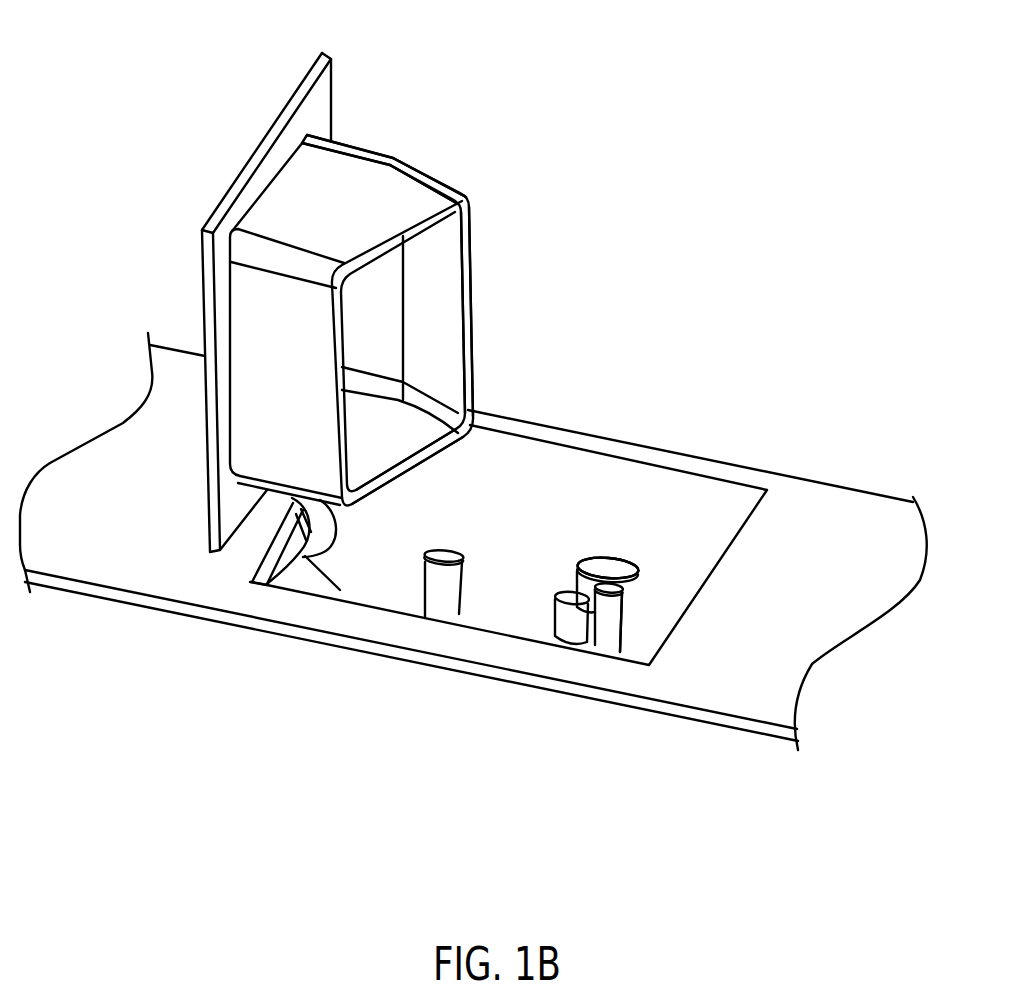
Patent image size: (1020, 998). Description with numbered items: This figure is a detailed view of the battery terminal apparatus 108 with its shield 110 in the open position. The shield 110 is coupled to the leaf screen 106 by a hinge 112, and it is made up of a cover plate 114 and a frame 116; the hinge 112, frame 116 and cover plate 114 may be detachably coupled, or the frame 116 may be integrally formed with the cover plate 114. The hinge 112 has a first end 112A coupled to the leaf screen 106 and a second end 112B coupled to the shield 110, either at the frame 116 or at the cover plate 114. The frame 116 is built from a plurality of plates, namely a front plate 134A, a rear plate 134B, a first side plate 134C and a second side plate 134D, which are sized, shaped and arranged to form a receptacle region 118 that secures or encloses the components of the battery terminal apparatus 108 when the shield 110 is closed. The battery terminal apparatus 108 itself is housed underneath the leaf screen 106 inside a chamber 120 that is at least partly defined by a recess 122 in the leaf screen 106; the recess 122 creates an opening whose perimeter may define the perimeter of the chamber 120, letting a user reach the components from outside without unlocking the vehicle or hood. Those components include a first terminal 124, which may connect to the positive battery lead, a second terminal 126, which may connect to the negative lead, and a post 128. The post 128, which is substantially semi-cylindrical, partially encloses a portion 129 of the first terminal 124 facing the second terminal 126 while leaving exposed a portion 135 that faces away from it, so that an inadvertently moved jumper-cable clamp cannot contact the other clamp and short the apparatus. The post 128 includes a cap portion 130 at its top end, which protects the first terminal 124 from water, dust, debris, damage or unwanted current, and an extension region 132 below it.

The leaf screen 106 is at (143, 452).
The battery terminal apparatus 108 is at (511, 527).
The shield 110 is at (262, 138).
The hinge 112 is at (306, 548).
The first end 112A is at (265, 582).
The second end 112B is at (297, 498).
The cover plate 114 is at (315, 72).
The frame 116 is at (368, 149).
The receptacle region 118 is at (397, 299).
The chamber 120 is at (617, 520).
The recess 122 is at (723, 530).
The first terminal 124 is at (609, 622).
The second terminal 126 is at (440, 598).
The post 128 is at (572, 576).
The portion 129 is at (598, 630).
The cap portion 130 is at (620, 560).
The extension region 132 is at (567, 628).
The front plate 134A is at (471, 234).
The rear plate 134B is at (263, 327).
The first side plate 134C is at (363, 211).
The second side plate 134D is at (391, 437).
The portion 135 is at (622, 620).